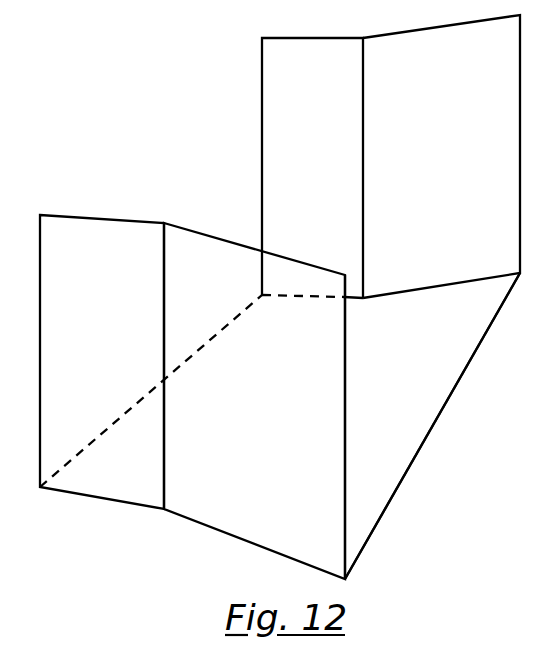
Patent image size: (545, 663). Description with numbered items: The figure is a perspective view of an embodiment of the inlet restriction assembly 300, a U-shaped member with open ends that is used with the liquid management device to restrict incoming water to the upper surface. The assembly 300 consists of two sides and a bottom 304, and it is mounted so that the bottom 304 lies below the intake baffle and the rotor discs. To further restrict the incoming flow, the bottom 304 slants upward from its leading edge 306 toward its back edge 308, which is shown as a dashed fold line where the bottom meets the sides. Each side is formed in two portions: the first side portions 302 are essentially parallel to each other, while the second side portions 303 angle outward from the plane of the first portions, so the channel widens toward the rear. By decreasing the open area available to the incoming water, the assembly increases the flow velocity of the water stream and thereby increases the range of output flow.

The inlet restriction assembly 300 is at (203, 190).
The first side portions 302 is at (110, 302).
The second side portions 303 is at (260, 471).
The bottom 304 is at (427, 380).
The leading edge 306 is at (417, 450).
The back edge 308 is at (105, 424).